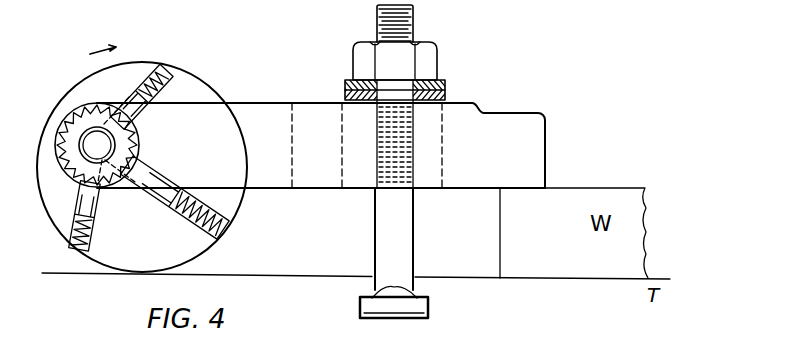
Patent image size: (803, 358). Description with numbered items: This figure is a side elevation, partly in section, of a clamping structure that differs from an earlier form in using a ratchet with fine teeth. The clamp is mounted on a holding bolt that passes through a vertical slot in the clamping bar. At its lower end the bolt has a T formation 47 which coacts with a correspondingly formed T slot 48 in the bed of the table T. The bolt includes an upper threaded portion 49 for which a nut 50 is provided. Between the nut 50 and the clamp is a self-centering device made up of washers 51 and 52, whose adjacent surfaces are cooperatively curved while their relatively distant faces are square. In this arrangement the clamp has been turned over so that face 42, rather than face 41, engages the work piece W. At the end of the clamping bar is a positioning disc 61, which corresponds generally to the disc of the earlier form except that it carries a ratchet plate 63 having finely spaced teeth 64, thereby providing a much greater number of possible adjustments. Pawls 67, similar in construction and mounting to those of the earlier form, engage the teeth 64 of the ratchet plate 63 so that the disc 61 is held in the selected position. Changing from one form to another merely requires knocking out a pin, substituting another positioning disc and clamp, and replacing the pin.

The face 41 is at (518, 111).
The face 42 is at (509, 185).
The T formation 47 is at (420, 308).
The T slot 48 is at (372, 319).
The upper threaded portion 49 is at (415, 20).
The nut 50 is at (433, 54).
The washer 51 is at (446, 82).
The washer 52 is at (450, 98).
The disc 61 is at (201, 81).
The ratchet plate 63 is at (50, 121).
The teeth 64 is at (70, 112).
The pawls 67 is at (158, 170).